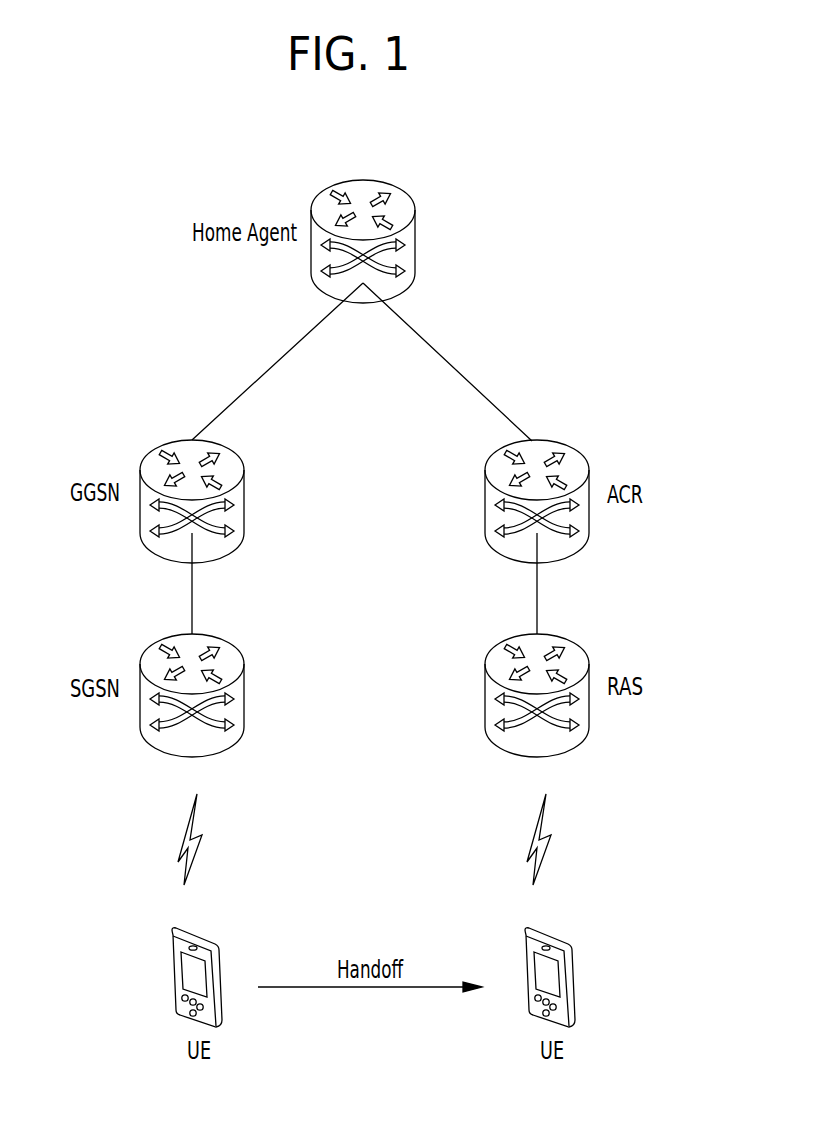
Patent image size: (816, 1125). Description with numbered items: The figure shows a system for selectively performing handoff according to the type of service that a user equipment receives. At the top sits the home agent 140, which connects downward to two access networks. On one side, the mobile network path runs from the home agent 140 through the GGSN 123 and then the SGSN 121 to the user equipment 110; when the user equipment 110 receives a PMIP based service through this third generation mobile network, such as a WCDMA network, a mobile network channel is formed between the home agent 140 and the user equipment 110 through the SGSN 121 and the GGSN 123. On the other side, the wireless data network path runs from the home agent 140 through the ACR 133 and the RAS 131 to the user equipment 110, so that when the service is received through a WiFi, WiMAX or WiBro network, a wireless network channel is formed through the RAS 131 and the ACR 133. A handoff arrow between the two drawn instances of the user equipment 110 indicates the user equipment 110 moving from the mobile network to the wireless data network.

The home agent 140 is at (394, 183).
The gateway GPRS support node 123 is at (222, 446).
The access control router 133 is at (566, 446).
The service GPRS support node 121 is at (222, 640).
The radio access station 131 is at (567, 640).
The user equipment 110 is at (210, 938).